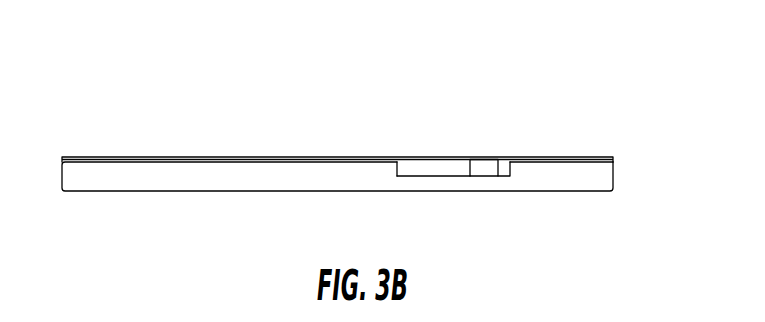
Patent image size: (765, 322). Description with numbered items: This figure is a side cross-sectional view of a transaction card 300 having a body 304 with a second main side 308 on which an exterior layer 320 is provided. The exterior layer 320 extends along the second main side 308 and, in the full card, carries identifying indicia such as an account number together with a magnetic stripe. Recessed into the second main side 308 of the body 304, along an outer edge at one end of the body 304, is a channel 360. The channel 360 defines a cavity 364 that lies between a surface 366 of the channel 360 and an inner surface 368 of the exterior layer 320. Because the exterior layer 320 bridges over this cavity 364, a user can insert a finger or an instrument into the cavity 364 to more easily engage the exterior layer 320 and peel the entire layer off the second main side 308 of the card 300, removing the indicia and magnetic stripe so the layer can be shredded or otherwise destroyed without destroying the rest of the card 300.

The card 300 is at (118, 95).
The body 304 is at (353, 143).
The second main side 308 is at (580, 148).
The exterior layer 320 is at (223, 156).
The channel 360 is at (400, 167).
The cavity 364 is at (445, 153).
The surface 366 is at (497, 157).
The inner surface 368 is at (470, 160).